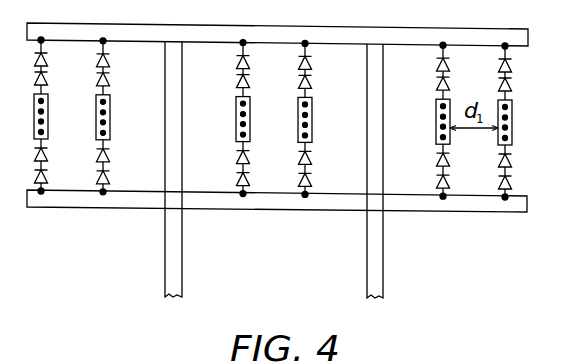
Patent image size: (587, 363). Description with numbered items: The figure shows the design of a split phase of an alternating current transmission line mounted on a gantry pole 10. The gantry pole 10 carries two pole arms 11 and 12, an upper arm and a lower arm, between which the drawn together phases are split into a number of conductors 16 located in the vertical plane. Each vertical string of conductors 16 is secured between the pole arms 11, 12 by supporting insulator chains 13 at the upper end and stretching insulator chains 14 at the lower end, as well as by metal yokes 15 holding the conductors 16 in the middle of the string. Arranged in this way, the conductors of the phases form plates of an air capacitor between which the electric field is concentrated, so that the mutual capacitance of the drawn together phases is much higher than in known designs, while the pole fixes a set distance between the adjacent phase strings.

The gantry pole 10 is at (383, 279).
The pole arm 11 is at (486, 43).
The pole arm 12 is at (498, 212).
The supporting insulator chain 13 is at (510, 83).
The stretching insulator chain 14 is at (510, 180).
The metal yoke 15 is at (512, 135).
The conductor 16 is at (512, 112).